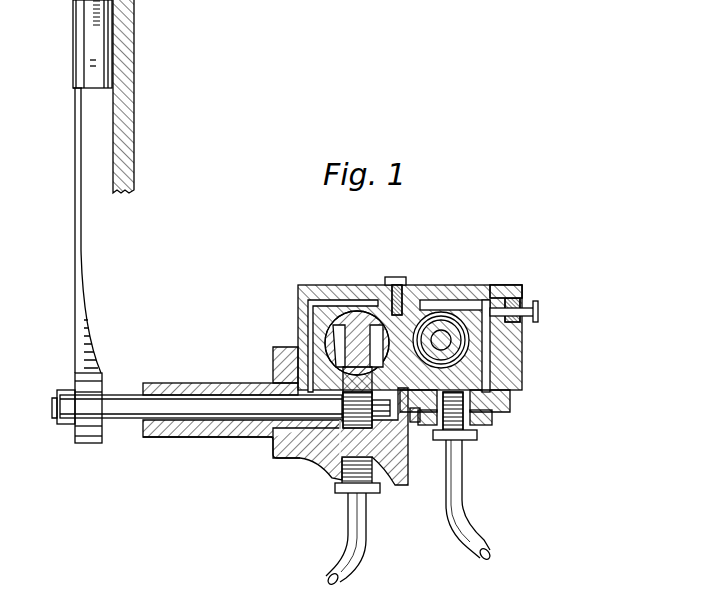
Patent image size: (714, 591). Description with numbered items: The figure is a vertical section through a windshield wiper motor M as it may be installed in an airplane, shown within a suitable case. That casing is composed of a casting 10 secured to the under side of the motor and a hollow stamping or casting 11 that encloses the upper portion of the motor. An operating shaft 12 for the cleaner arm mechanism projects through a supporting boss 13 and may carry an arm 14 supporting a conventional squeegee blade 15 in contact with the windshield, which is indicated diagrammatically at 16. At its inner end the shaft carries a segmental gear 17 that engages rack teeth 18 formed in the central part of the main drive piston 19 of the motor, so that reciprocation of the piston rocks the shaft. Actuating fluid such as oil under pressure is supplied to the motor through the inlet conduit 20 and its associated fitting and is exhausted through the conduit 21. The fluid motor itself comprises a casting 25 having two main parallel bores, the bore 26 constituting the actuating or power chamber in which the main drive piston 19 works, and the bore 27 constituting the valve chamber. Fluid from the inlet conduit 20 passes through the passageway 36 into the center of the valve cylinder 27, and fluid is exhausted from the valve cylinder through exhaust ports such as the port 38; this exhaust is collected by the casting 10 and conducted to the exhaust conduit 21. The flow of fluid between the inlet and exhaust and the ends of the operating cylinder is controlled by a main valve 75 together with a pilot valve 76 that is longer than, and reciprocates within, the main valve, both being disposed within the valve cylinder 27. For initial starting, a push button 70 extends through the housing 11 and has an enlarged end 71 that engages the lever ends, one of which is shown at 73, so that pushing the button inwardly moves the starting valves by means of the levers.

The casting 10 is at (307, 467).
The hollow stamping or casting 11 is at (327, 290).
The operating shaft 12 is at (119, 413).
The supporting boss 13 is at (208, 437).
The arm 14 is at (82, 250).
The squeegee blade 15 is at (93, 66).
The windshield 16 is at (128, 57).
The segmental gear 17 is at (284, 352).
The rack teeth 18 is at (340, 340).
The main drive piston 19 is at (363, 300).
The inlet conduit 20 is at (455, 470).
The exhaust conduit 21 is at (358, 510).
The casting 25 is at (488, 372).
The bore (actuating or power chamber) 26 is at (312, 332).
The bore (valve chamber) 27 is at (466, 330).
The passageway 36 is at (460, 352).
The exhaust port 38 is at (413, 423).
The push button 70 is at (538, 311).
The enlarged end 71 is at (513, 300).
The end of lever 73 is at (489, 300).
The main valve 75 is at (397, 290).
The pilot valve 76 is at (440, 300).
The windshield cleaner motor M is at (462, 269).